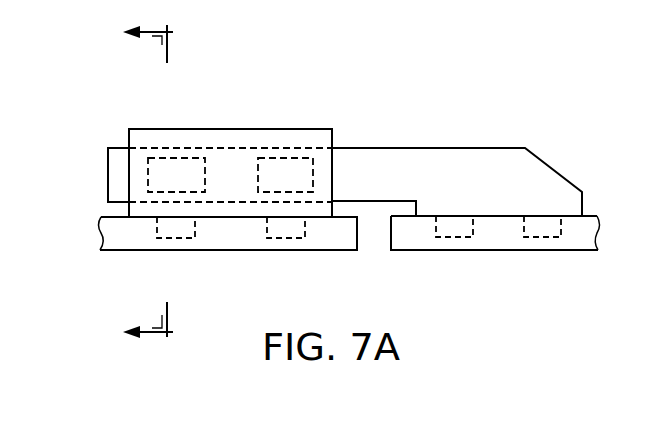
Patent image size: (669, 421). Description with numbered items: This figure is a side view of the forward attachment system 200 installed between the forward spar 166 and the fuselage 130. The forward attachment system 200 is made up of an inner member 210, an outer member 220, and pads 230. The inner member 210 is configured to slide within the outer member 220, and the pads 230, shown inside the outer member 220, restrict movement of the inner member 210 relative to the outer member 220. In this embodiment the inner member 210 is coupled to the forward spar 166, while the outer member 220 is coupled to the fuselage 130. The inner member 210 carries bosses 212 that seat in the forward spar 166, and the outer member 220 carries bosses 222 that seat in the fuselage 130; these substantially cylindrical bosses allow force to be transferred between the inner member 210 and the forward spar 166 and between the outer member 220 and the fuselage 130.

The forward attachment system 200 is at (543, 75).
The inner member 210 is at (108, 174).
The outer member 220 is at (226, 129).
The pads 230 is at (176, 157).
The fuselage 130 is at (102, 237).
The bosses 222 is at (177, 238).
The forward spar 166 is at (588, 216).
The bosses 212 is at (455, 238).